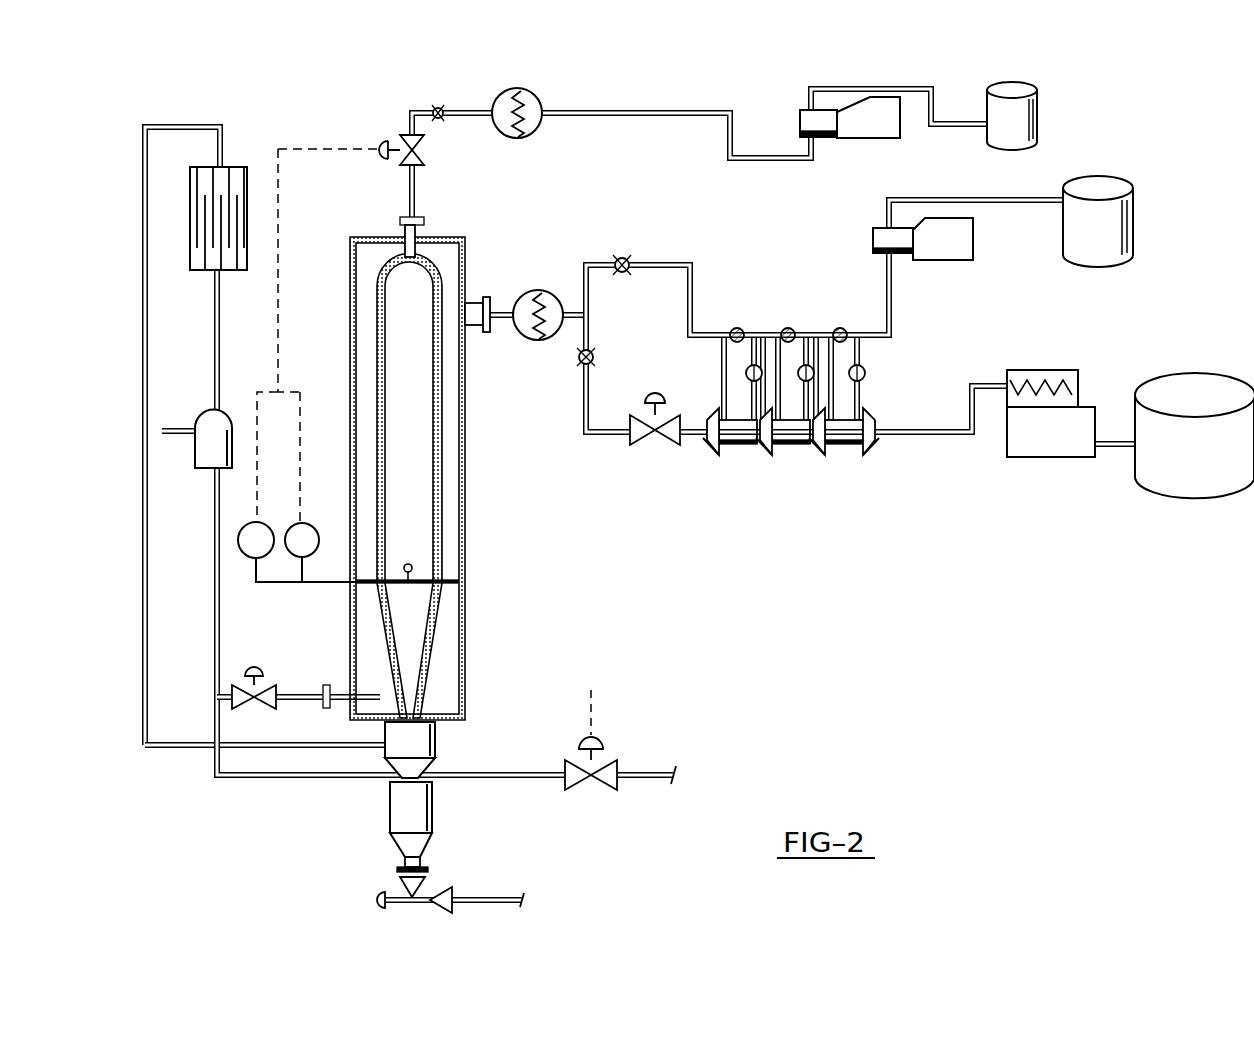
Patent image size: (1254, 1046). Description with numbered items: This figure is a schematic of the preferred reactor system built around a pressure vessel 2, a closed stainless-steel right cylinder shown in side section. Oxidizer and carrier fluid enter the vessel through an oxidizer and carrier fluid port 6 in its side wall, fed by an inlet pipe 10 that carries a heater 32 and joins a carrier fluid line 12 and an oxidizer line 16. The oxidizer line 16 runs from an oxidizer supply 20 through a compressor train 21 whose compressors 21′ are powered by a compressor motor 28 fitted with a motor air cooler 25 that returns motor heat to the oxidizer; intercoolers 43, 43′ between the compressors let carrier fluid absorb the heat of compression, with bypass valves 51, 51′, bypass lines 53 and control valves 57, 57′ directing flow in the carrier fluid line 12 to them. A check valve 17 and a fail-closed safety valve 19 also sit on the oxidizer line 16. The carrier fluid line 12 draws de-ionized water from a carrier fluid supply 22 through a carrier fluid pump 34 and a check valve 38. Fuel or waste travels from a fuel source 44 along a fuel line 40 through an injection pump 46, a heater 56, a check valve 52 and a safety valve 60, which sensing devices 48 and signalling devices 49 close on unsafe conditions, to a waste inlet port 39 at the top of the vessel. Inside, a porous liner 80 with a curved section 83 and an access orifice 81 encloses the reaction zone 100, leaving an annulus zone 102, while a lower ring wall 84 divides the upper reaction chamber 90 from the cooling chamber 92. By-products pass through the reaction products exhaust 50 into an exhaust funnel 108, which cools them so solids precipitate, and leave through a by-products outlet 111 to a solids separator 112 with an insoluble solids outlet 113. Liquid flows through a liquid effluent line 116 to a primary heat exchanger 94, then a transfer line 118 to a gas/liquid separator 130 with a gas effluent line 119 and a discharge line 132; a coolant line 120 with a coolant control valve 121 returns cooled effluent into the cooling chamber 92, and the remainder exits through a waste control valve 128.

The pressure vessel 2 is at (340, 362).
The oxidizer and carrier fluid port 6 is at (474, 304).
The inlet pipe 10 is at (493, 326).
The carrier fluid line 12 is at (672, 262).
The oxidizer line 16 is at (581, 437).
The check valve 17 is at (590, 356).
The safety valve 19 is at (653, 441).
The oxidizer supply 20 is at (1201, 380).
The compressor train 21 is at (720, 503).
The compressor 21′ is at (707, 445).
The carrier fluid supply 22 is at (1116, 218).
The motor air cooler 25 is at (1064, 370).
The compressor motor 28 is at (1033, 448).
The heater 32 is at (543, 292).
The carrier fluid pump 34 is at (966, 236).
The check valve 38 is at (623, 257).
The waste inlet port 39 is at (420, 219).
The fuel line 40 is at (478, 108).
The intercooler 43 is at (742, 436).
The intercooler 43′ is at (804, 436).
The fuel source 44 is at (1022, 126).
The injection pump 46 is at (872, 122).
The sensing devices 48 is at (246, 547).
The signalling devices 49 is at (301, 536).
The reaction products exhaust 50 is at (417, 568).
The bypass valve 51 is at (734, 328).
The bypass valve 51′ is at (789, 328).
The check valve 52 is at (442, 107).
The bypass lines 53 is at (762, 330).
The heater 56 is at (540, 98).
The control valve 57 is at (745, 372).
The control valve 57′ is at (814, 371).
The safety valve 60 is at (400, 135).
The porous liner 80 is at (377, 360).
The access orifice 81 is at (418, 240).
The curved section 83 is at (444, 264).
The lower ring wall 84 is at (455, 592).
The upper reaction chamber 90 is at (450, 470).
The cooling chamber 92 is at (444, 666).
The primary heat exchanger 94 is at (233, 167).
The reaction zone 100 is at (408, 284).
The annulus zone 102 is at (368, 283).
The exhaust funnel 108 is at (434, 640).
The by-products outlet 111 is at (438, 728).
The solids separator 112 is at (412, 822).
The insoluble solids outlet 113 is at (478, 896).
The liquid effluent line 116 is at (149, 690).
The transfer line 118 is at (213, 358).
The gas effluent line 119 is at (180, 427).
The coolant line 120 is at (297, 694).
The coolant control valve 121 is at (255, 701).
The waste control valve 128 is at (596, 759).
The gas/liquid separator 130 is at (208, 456).
The discharge line 132 is at (221, 626).